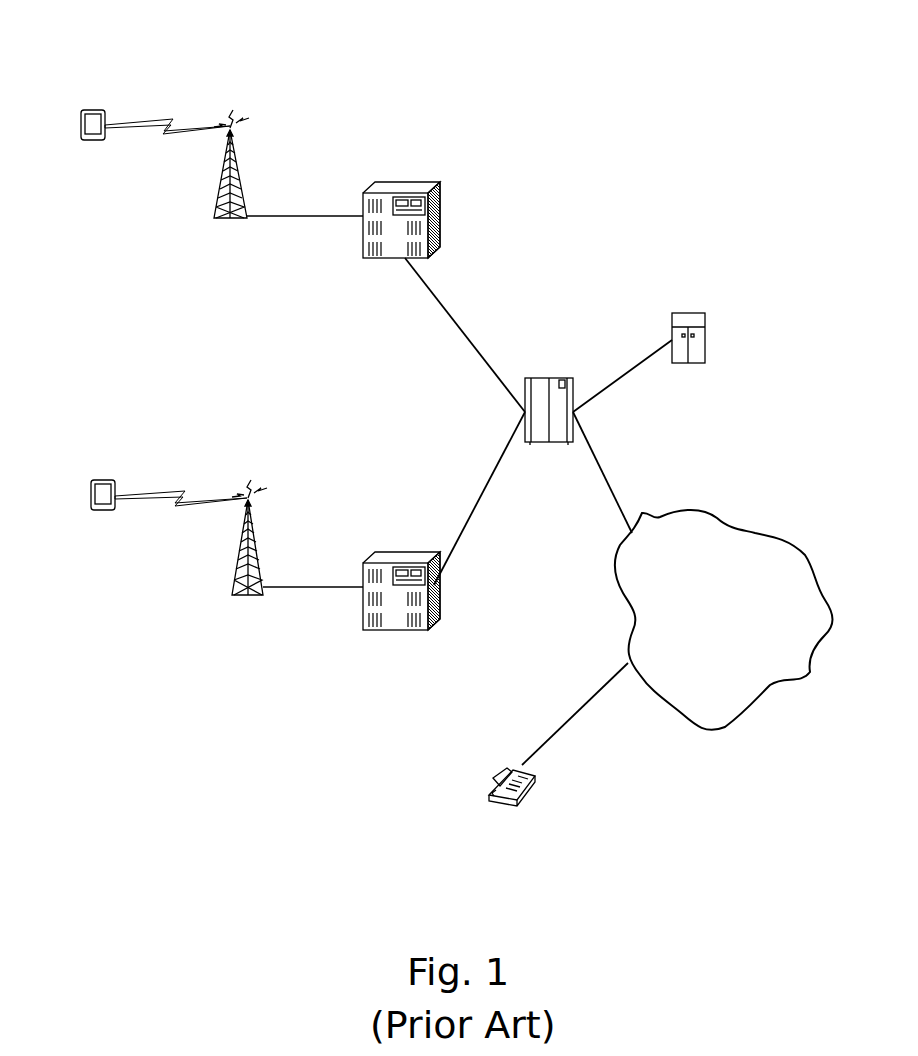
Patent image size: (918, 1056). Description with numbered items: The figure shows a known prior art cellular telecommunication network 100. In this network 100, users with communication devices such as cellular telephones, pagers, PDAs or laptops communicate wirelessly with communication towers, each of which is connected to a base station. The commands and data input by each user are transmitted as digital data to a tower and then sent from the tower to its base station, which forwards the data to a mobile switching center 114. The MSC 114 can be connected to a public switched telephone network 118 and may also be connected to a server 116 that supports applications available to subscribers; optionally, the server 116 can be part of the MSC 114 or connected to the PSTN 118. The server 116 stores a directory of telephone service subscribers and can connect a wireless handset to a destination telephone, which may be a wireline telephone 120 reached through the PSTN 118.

The cellular telecommunication network 100 is at (510, 102).
The mobile switching center 114 is at (563, 377).
The server 116 is at (700, 313).
The public switched telephone network 118 is at (725, 520).
The wireline telephone 120 is at (492, 778).